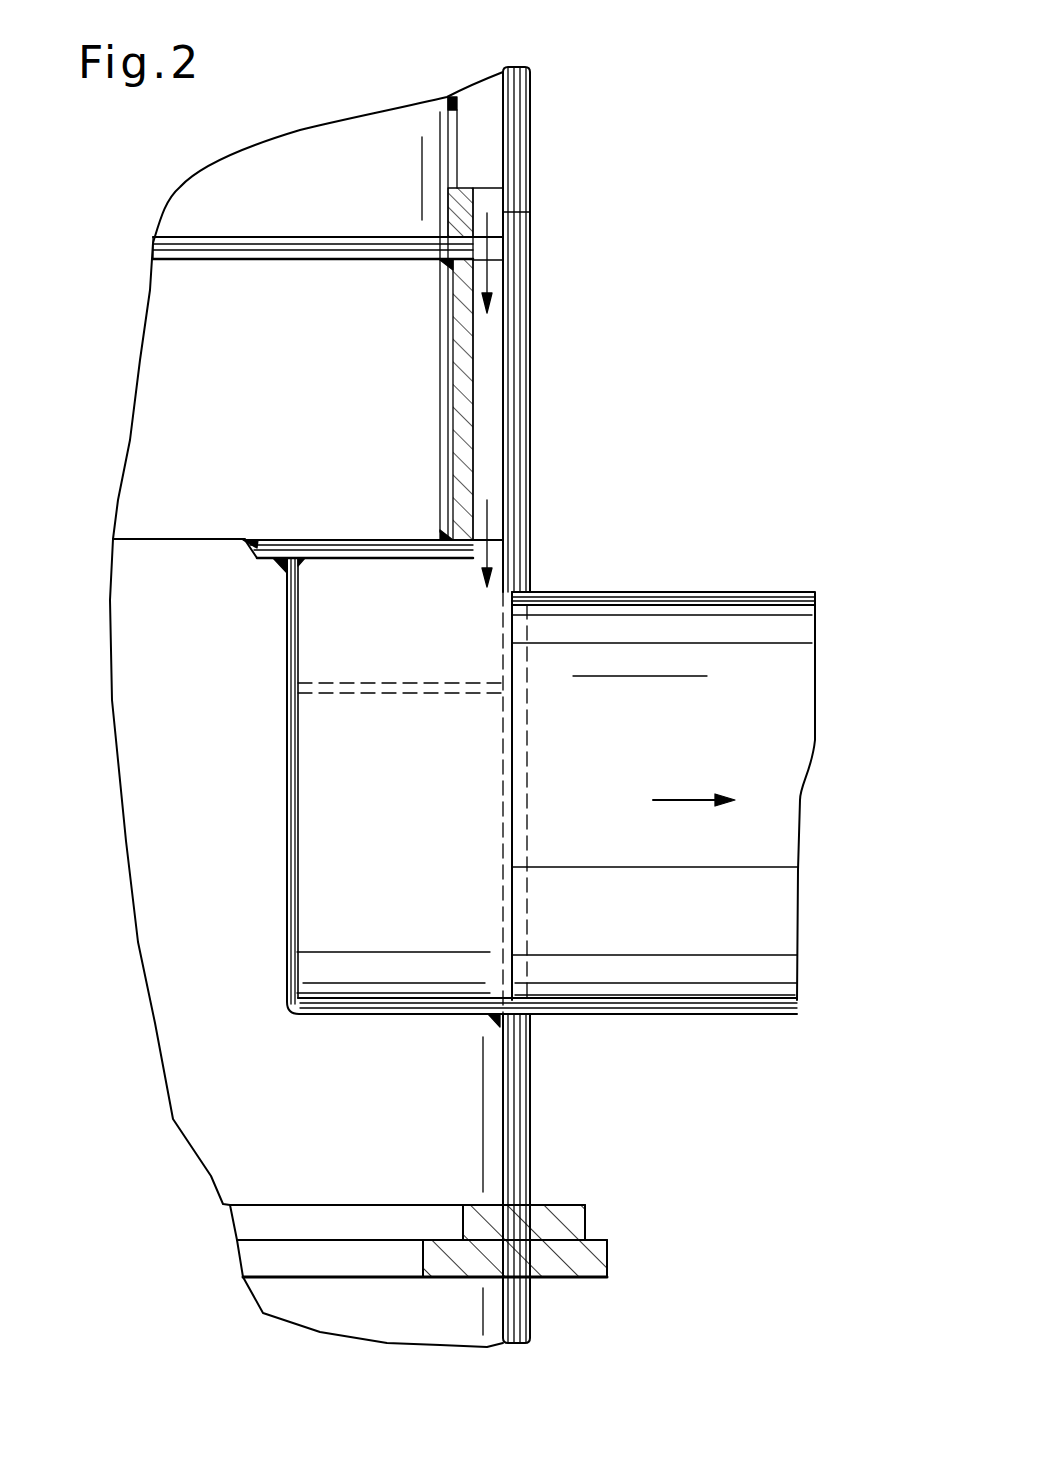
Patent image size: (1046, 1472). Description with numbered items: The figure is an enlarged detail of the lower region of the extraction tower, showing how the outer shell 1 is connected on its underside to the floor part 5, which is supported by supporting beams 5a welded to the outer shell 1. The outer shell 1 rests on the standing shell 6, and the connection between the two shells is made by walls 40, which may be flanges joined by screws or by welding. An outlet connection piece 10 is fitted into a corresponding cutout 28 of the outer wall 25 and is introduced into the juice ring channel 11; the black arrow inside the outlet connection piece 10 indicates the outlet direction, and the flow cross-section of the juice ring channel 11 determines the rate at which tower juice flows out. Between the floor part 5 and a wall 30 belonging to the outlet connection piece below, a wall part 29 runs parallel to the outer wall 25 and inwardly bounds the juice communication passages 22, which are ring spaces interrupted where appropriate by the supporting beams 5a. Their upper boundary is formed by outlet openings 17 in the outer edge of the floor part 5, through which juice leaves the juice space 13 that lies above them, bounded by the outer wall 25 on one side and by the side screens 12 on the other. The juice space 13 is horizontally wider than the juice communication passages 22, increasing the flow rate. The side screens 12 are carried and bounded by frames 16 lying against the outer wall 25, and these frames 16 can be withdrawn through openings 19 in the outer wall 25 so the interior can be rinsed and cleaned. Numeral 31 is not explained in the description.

The outer shell 1 is at (612, 1123).
The floor part 5 is at (212, 247).
The supporting beams 5a is at (187, 540).
The standing shell 6 is at (553, 1318).
The outlet connection piece 10 is at (780, 705).
The juice ring channel 11 is at (438, 623).
The side screens 12 is at (450, 93).
The juice space 13 is at (475, 113).
The frames 16 is at (468, 210).
The outlet openings 17 is at (495, 250).
The openings 19 is at (520, 185).
The juice communication passages 22 is at (485, 462).
The outer wall 25 is at (513, 1183).
The cutout 28 is at (517, 975).
The wall part 29 is at (463, 362).
The wall 30 is at (415, 538).
The housing wall 31 is at (365, 168).
The walls 40 is at (558, 1227).